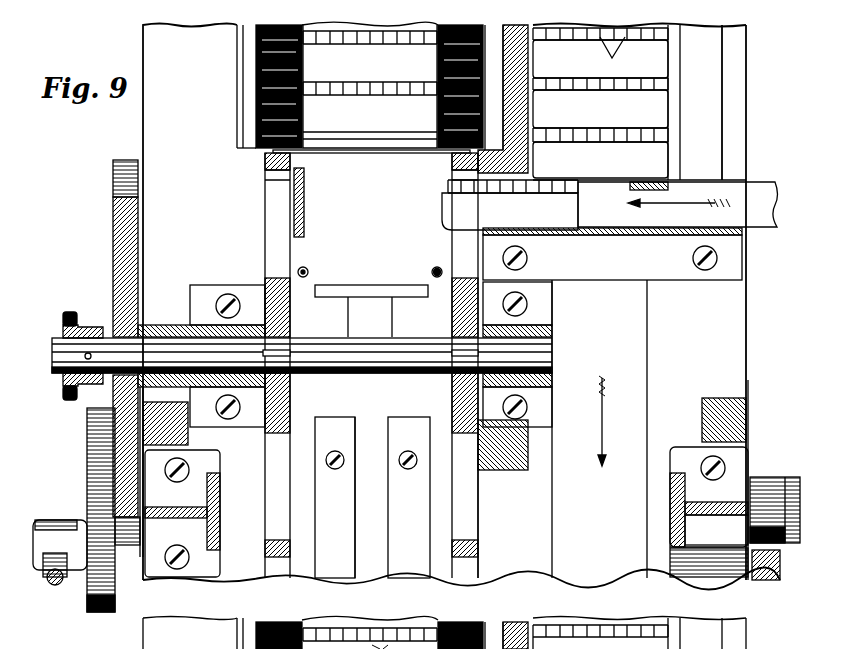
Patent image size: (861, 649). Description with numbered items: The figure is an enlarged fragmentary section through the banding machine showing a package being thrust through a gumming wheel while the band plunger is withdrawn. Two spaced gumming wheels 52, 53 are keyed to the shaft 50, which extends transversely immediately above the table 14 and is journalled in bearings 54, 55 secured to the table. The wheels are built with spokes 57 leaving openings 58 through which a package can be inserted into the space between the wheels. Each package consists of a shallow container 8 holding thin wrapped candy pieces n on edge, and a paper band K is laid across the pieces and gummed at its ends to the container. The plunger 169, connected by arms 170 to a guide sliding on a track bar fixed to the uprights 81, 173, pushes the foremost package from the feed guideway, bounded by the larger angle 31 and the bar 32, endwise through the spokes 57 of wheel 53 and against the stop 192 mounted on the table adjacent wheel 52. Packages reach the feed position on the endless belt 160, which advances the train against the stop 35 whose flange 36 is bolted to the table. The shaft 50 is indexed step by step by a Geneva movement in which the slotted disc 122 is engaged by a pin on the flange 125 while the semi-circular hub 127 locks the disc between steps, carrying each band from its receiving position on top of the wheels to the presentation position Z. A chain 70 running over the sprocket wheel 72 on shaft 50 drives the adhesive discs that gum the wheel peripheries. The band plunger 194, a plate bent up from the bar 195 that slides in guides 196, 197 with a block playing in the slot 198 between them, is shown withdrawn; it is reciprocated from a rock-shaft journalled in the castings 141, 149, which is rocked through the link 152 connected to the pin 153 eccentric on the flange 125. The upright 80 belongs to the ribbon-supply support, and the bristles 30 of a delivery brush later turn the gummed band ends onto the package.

The container (tray or boat) 8 is at (666, 150).
The table 14 is at (730, 352).
The bristles 30 is at (258, 114).
The larger angle 31 is at (672, 78).
The bar 32 is at (520, 52).
The stop 35 is at (648, 236).
The flange 36 is at (588, 272).
The shaft 50 is at (65, 352).
The gumming wheel 52 is at (275, 282).
The gumming wheel 53 is at (478, 273).
The bearing 54 is at (540, 385).
The bearing 55 is at (208, 325).
The spokes 57 is at (478, 490).
The openings 58 is at (470, 515).
The chain 70 is at (67, 318).
The sprocket wheel 72 is at (90, 325).
The upright 80 is at (167, 406).
The upright 81 is at (745, 418).
The disc 122 is at (125, 210).
The flange 125 is at (98, 616).
The semi-circular hub 127 is at (127, 546).
The upright casting 141 is at (700, 508).
The second casting 149 is at (190, 512).
The adjustable link 152 is at (52, 586).
The pin 153 is at (33, 532).
The endless belt 160 is at (603, 565).
The plunger 169 is at (753, 192).
The arms 170 is at (630, 188).
The upright 173 is at (520, 450).
The stop 192 is at (304, 206).
The plunger 194 is at (366, 290).
The bar 195 is at (346, 317).
The guide 196 is at (345, 506).
The guide 197 is at (400, 511).
The slot 198 is at (354, 546).
The band K is at (358, 150).
The presentation position Z is at (400, 158).
The candy pieces n is at (612, 57).